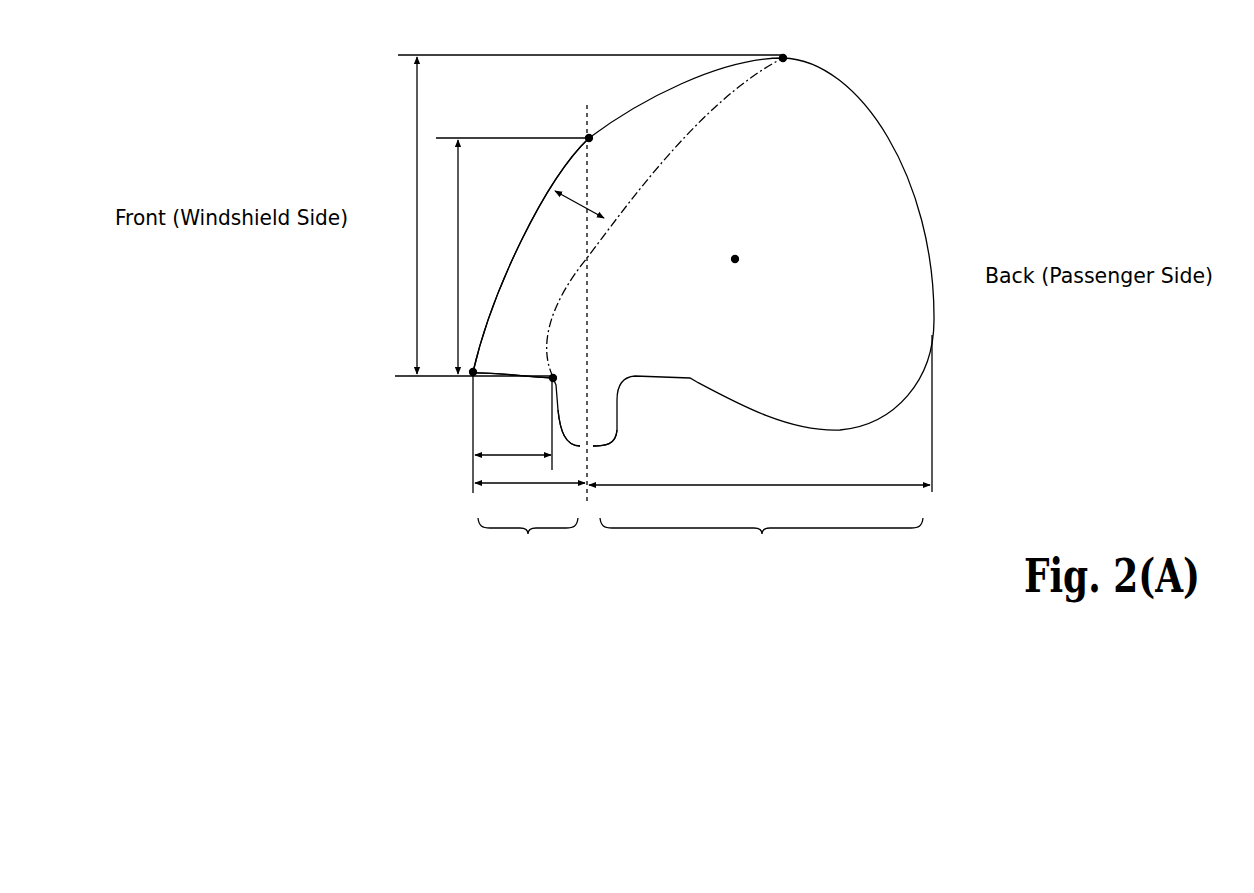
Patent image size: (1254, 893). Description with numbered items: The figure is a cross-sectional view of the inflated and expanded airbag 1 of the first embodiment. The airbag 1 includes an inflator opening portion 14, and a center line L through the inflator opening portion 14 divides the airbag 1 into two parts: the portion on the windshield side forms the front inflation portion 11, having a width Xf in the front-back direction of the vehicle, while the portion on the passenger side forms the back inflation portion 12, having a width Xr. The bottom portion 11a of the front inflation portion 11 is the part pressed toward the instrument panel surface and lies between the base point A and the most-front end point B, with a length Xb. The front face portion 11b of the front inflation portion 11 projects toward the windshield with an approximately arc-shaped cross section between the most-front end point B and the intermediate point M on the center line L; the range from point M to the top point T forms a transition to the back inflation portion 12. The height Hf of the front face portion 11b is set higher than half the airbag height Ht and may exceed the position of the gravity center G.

The airbag 1 is at (916, 87).
The front inflation portion 11 is at (528, 539).
The bottom portion 11a is at (513, 380).
The front face portion 11b is at (547, 213).
The back inflation portion 12 is at (761, 539).
The inflator opening portion 14 is at (596, 451).